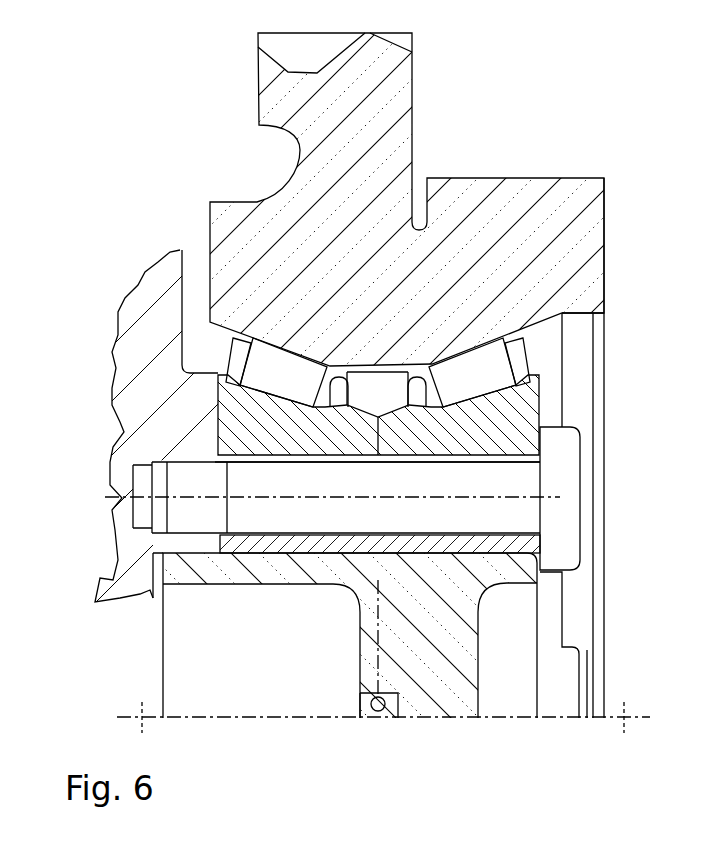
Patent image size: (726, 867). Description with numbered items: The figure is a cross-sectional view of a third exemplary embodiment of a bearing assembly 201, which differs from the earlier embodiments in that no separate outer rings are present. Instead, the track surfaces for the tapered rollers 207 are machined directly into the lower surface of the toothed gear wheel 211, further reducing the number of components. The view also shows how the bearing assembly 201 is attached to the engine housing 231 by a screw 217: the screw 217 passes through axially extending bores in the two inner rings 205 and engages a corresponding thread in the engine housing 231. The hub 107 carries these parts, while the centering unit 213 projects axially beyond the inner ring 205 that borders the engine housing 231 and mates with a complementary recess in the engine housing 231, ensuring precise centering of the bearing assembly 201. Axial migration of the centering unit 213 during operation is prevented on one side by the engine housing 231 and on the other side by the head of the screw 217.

The bearing assembly 201 is at (515, 106).
The toothed gear wheel 211 is at (230, 212).
The hub 107 is at (430, 312).
The engine housing 231 is at (160, 302).
The tapered rollers 207 is at (268, 368).
The inner rings 205 is at (343, 440).
The screw 217 is at (557, 482).
The centering unit 213 is at (293, 573).